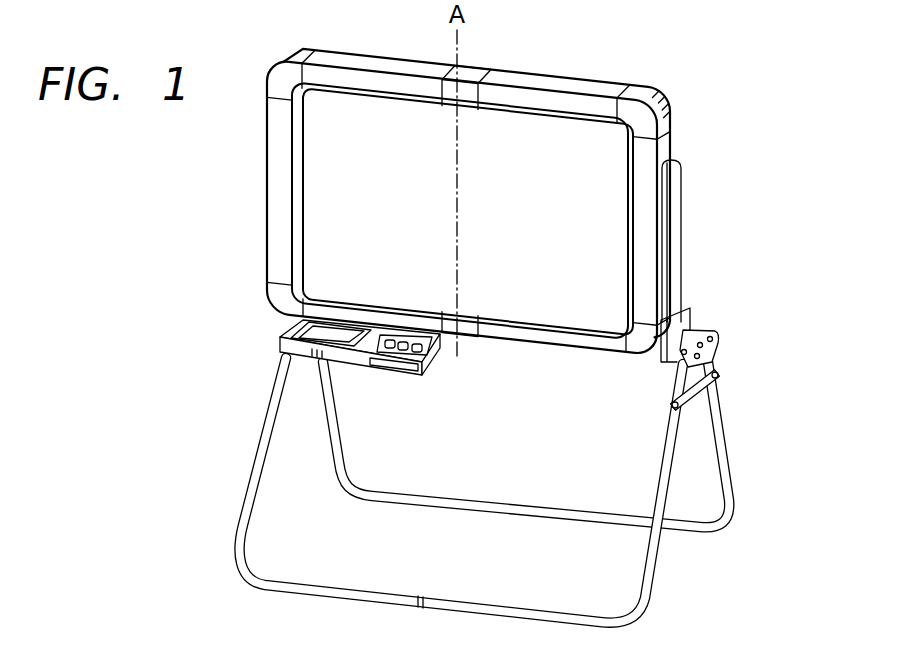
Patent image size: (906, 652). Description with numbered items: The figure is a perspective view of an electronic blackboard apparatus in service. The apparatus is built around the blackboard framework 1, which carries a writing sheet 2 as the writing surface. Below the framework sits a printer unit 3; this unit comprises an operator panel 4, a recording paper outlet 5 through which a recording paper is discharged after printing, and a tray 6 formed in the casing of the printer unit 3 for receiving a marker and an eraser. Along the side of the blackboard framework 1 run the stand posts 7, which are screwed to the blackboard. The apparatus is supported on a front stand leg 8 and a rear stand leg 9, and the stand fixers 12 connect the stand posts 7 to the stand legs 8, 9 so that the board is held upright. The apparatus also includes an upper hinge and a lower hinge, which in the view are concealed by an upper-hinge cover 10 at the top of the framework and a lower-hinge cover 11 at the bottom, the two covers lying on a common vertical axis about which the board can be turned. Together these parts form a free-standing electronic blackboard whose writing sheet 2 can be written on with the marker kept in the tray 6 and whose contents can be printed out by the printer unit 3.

The blackboard framework 1 is at (569, 100).
The writing sheet 2 is at (369, 113).
The printer unit 3 is at (357, 364).
The operator panel 4 is at (432, 356).
The recording paper outlet 5 is at (400, 372).
The tray 6 is at (300, 328).
The stand post 7 is at (683, 212).
The front stand leg 8 is at (440, 604).
The rear stand leg 9 is at (734, 495).
The upper-hinge cover 10 is at (482, 72).
The lower-hinge cover 11 is at (474, 331).
The stand fixer 12 is at (719, 332).